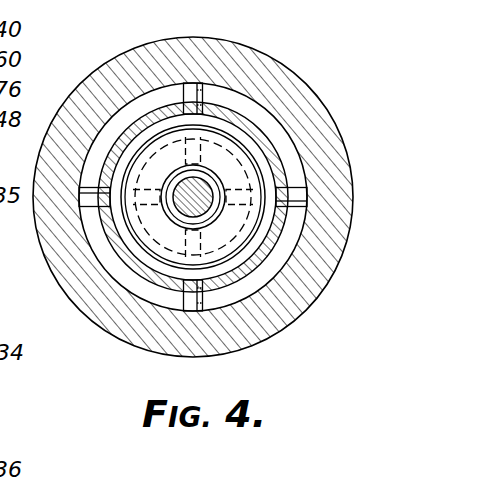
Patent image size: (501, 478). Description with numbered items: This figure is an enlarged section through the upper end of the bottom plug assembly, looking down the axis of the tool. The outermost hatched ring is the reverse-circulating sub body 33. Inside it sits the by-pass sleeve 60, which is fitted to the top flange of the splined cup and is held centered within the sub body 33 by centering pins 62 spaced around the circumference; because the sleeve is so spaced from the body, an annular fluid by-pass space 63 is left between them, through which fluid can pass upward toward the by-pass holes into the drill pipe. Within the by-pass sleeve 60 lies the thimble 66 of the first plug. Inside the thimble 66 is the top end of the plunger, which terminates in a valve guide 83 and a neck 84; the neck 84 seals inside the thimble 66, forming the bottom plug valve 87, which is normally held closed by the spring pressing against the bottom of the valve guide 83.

The reverse-circulating sub body 33 is at (323, 277).
The by-pass sleeve 60 is at (150, 110).
The centering pins 62 is at (213, 87).
The fluid by-pass space 63 is at (250, 105).
The thimble 66 is at (272, 143).
The valve guide 83 is at (193, 197).
The neck 84 is at (176, 224).
The bottom plug valve 87 is at (198, 171).